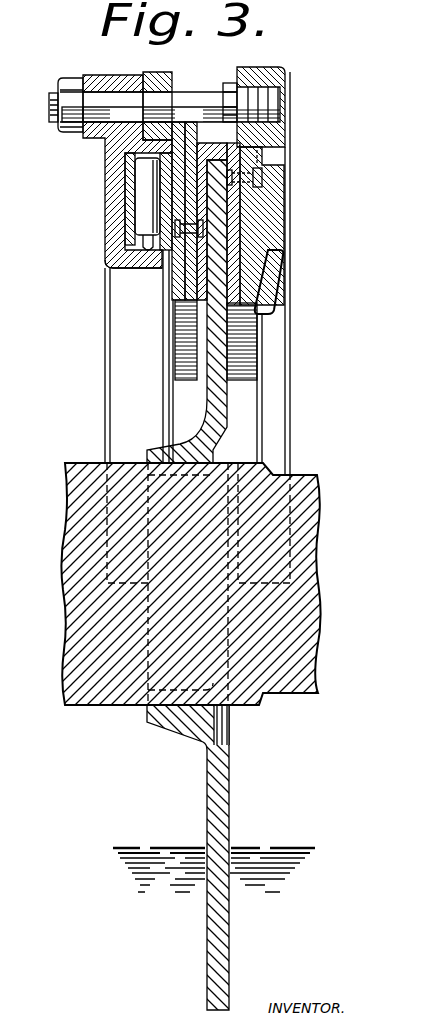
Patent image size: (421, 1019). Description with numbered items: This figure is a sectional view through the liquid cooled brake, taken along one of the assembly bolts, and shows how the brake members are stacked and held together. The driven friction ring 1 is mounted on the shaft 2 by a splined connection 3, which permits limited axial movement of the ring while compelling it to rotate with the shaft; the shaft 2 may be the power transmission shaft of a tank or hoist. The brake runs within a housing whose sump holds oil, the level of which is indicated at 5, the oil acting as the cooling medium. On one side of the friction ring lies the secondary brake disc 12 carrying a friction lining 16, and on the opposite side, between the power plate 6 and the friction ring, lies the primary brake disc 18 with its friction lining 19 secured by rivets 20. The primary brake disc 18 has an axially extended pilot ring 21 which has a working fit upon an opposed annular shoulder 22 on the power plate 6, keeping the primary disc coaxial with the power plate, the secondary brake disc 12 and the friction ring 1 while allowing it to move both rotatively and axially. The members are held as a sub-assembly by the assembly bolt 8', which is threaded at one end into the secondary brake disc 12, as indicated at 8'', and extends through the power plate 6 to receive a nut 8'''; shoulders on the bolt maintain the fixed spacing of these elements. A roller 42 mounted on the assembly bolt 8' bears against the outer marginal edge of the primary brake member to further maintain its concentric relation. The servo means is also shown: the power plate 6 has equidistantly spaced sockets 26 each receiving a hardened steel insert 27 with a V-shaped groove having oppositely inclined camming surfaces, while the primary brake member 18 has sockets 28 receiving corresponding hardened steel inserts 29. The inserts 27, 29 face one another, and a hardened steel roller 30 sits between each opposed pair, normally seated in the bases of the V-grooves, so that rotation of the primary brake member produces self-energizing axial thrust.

The driven friction ring 1 is at (223, 908).
The shaft 2 is at (66, 623).
The splined connection 3 is at (175, 478).
The oil level 5 is at (265, 847).
The power plate 6 is at (107, 143).
The assembly bolt 8' is at (118, 107).
The threaded end 8'' is at (271, 102).
The nut 8''' is at (46, 96).
The secondary brake disc 12 is at (273, 231).
The friction lining 16 is at (228, 275).
The primary brake disc 18 is at (183, 272).
The friction lining 19 is at (205, 283).
The rivets 20 is at (228, 205).
The pilot ring 21 is at (127, 257).
The annular shoulder 22 is at (147, 270).
The sockets 26 is at (118, 226).
The hardened steel insert 27 is at (128, 198).
The sockets 28 is at (247, 143).
The hardened steel insert 29 is at (200, 206).
The hardened steel roller 30 is at (140, 173).
The roller 42 is at (168, 110).